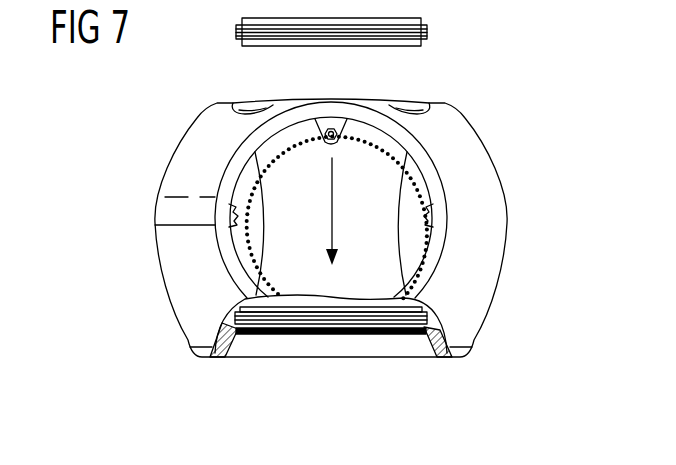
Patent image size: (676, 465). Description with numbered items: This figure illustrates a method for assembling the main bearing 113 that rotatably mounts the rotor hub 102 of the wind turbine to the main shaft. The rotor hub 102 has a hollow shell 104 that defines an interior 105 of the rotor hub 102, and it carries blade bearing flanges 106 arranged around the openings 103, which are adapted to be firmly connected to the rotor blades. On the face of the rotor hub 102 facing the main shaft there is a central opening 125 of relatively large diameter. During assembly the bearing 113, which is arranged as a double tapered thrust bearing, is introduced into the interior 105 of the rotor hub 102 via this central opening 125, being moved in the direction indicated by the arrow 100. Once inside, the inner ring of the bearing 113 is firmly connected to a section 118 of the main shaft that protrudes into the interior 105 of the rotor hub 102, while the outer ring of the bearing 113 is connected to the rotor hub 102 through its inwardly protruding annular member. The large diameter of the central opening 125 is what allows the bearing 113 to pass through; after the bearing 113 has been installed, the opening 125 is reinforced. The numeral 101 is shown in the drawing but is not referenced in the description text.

The arrow 100 is at (332, 180).
The detector module housing 101 is at (152, 151).
The rotor hub 102 is at (522, 233).
The openings 103 is at (236, 256).
The hollow shell 104 is at (178, 180).
The interior 105 is at (283, 238).
The blade bearing flanges 106 is at (333, 124).
The bearing 113 is at (421, 32).
The section of the main shaft 118 is at (443, 337).
The central opening 125 is at (252, 99).